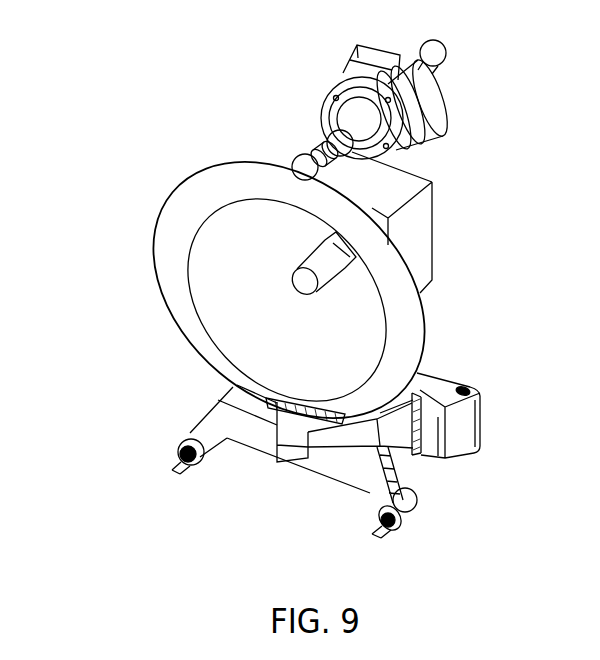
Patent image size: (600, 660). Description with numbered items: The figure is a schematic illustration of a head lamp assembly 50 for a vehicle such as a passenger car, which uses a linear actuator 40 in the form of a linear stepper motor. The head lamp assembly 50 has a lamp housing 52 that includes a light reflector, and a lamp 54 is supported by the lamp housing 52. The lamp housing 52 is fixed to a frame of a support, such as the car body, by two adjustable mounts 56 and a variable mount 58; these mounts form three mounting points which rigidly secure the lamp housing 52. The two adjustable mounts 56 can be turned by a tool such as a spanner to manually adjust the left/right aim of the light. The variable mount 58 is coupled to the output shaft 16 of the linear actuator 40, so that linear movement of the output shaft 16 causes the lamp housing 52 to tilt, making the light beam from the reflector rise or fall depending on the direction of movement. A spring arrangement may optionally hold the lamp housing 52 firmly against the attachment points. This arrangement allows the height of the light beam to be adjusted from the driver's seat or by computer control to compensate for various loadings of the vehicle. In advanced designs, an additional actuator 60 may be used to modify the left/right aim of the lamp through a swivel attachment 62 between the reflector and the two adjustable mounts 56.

The head lamp assembly 50 is at (108, 168).
The lamp housing 52 is at (172, 266).
The lamp 54 is at (327, 267).
The variable mount 58 is at (295, 162).
The output shaft 16 is at (330, 140).
The linear actuator 40 is at (424, 100).
The additional actuator 60 is at (448, 378).
The swivel attachment 62 is at (280, 413).
The adjustable mounts 56 is at (175, 458).